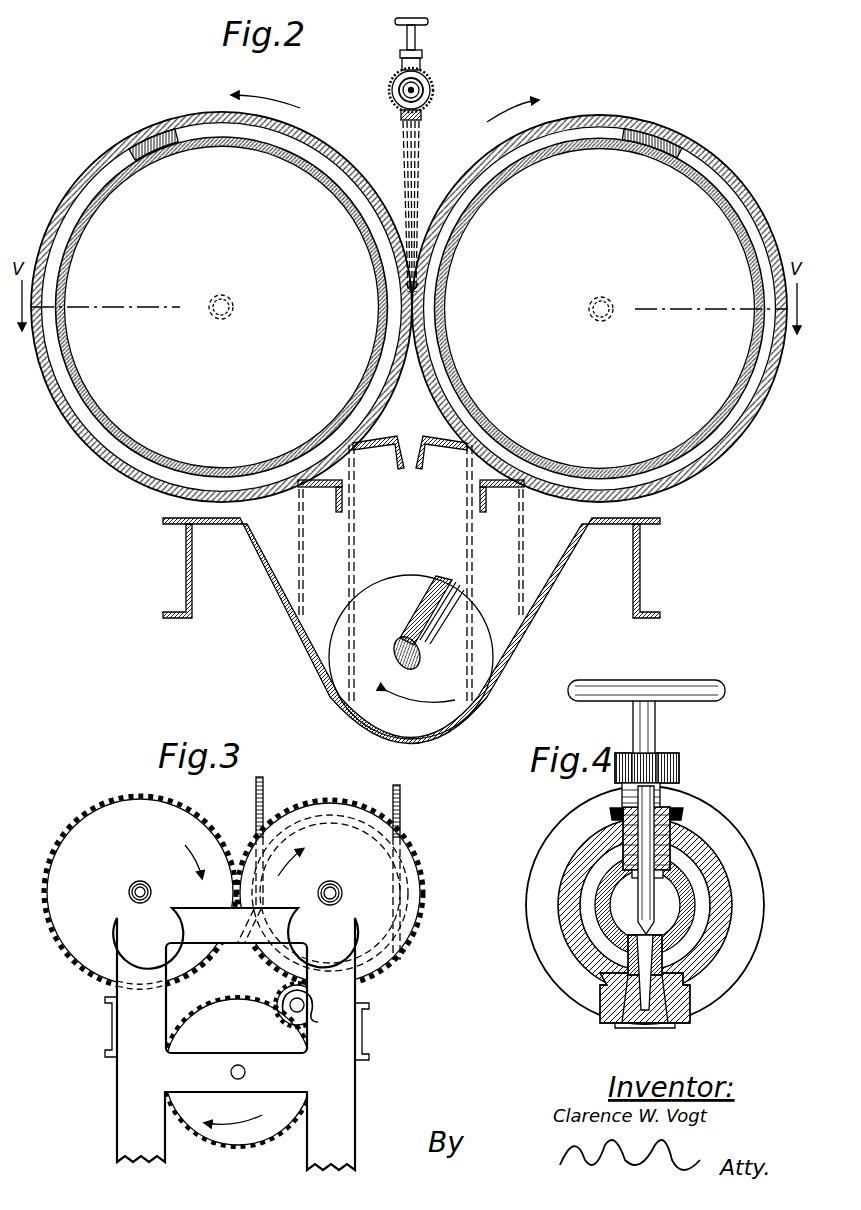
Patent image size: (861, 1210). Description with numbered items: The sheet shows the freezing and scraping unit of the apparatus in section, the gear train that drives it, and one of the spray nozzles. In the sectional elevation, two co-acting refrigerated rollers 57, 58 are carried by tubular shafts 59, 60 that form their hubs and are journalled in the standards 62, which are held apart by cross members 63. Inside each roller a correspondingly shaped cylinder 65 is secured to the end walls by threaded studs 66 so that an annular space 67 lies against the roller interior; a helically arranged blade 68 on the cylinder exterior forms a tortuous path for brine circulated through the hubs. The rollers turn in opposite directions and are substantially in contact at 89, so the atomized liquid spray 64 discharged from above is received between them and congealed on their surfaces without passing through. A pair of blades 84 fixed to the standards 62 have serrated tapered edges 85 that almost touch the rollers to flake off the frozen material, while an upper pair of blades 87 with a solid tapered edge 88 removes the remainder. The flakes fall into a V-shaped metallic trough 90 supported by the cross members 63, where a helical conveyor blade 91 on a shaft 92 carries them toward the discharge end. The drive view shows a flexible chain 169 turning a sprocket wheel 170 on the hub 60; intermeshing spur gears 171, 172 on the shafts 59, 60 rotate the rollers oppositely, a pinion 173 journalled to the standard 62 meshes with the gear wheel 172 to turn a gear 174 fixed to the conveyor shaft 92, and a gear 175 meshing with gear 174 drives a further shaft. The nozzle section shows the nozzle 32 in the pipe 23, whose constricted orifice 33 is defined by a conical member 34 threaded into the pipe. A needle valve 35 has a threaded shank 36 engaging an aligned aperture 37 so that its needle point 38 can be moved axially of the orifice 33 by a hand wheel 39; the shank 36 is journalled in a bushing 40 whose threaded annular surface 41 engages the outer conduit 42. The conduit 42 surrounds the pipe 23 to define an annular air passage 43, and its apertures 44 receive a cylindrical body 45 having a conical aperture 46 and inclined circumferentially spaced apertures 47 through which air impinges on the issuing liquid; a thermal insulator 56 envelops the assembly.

In FIG. 2, the U-section pipe 23 is at (392, 85).
In FIG. 4, the U-section pipe 23 is at (695, 885).
In FIG. 2, the nozzle 32 is at (416, 36).
In FIG. 4, the nozzle 32 is at (658, 733).
In FIG. 4, the constricted orifice 33 is at (612, 970).
In FIG. 4, the conical member 34 is at (618, 958).
In FIG. 4, the needle valve 35 is at (640, 898).
In FIG. 4, the threaded shank 36 is at (672, 818).
In FIG. 4, the aperture 37 is at (615, 860).
In FIG. 4, the needle point 38 is at (625, 927).
In FIG. 2, the hand wheel 39 is at (428, 22).
In FIG. 4, the hand wheel 39 is at (700, 680).
In FIG. 2, the bushing 40 is at (402, 64).
In FIG. 4, the bushing 40 is at (622, 800).
In FIG. 4, the threaded annular surface 41 is at (682, 812).
In FIG. 2, the conduit 42 is at (430, 76).
In FIG. 4, the conduit 42 is at (700, 875).
In FIG. 4, the annular passage 43 is at (690, 880).
In FIG. 4, the apertures 44 is at (690, 985).
In FIG. 2, the cylindrical body 45 is at (422, 116).
In FIG. 4, the cylindrical body 45 is at (612, 1000).
In FIG. 4, the conical aperture 46 is at (643, 1012).
In FIG. 4, the inclined apertures 47 is at (618, 1023).
In FIG. 4, the thermal insulator 56 is at (730, 952).
In FIG. 2, the roller 57 is at (325, 142).
In FIG. 2, the roller 58 is at (560, 117).
In FIG. 2, the tubular shaft 59 is at (222, 300).
In FIG. 3, the tubular shaft 59 is at (141, 880).
In FIG. 2, the tubular shaft 60 is at (605, 306).
In FIG. 3, the tubular shaft 60 is at (332, 880).
In FIG. 3, the standard 62 is at (340, 1090).
In FIG. 2, the cross members 63 is at (186, 570).
In FIG. 3, the cross members 63 is at (112, 1022).
In FIG. 2, the liquid spray 64 is at (422, 185).
In FIG. 2, the cylinder 65 is at (695, 152).
In FIG. 2, the threaded studs 66 is at (100, 150).
In FIG. 2, the annular space 67 is at (340, 182).
In FIG. 2, the helical blade 68 is at (180, 155).
In FIG. 2, the blades 84 is at (310, 477).
In FIG. 2, the tapered edges 85 is at (295, 474).
In FIG. 2, the blades 87 is at (380, 438).
In FIG. 2, the solid tapered edge 88 is at (352, 447).
In FIG. 2, the contacting point of rollers 89 is at (416, 322).
In FIG. 2, the V-shaped trough 90 is at (508, 648).
In FIG. 2, the helical conveyor blade 91 is at (432, 590).
In FIG. 2, the shaft 92 is at (406, 668).
In FIG. 3, the shaft 92 is at (238, 1065).
In FIG. 3, the flexible chain 169 is at (402, 797).
In FIG. 3, the sprocket wheel 170 is at (313, 822).
In FIG. 3, the spur gear 171 is at (78, 820).
In FIG. 3, the spur gear 172 is at (415, 862).
In FIG. 3, the pinion 173 is at (285, 993).
In FIG. 3, the gear 174 is at (203, 1020).
In FIG. 3, the gear 175 is at (308, 1016).